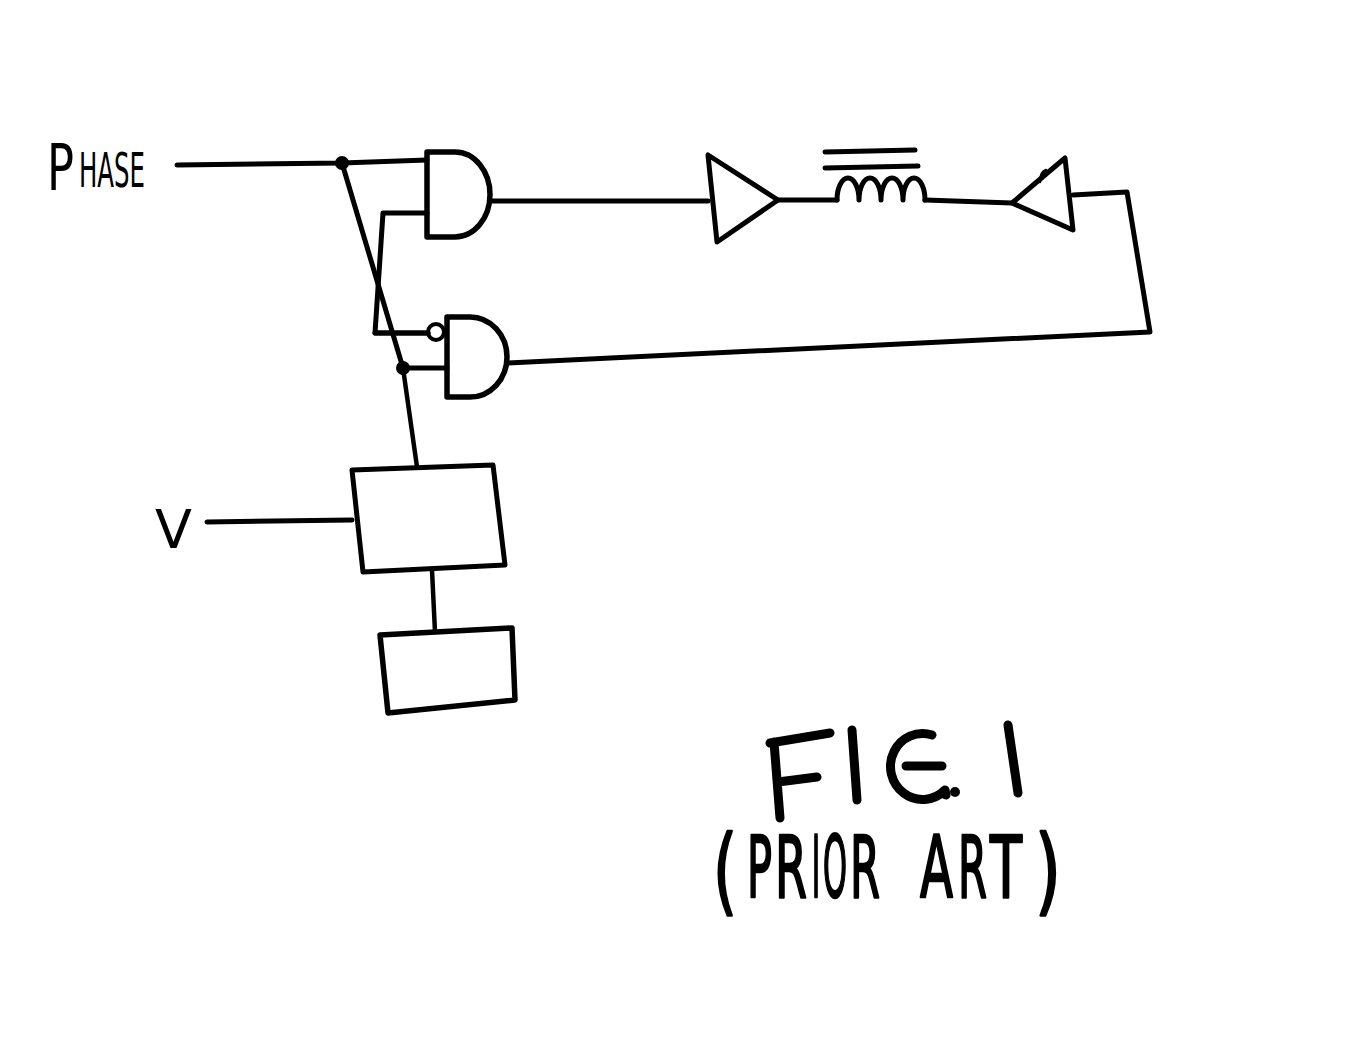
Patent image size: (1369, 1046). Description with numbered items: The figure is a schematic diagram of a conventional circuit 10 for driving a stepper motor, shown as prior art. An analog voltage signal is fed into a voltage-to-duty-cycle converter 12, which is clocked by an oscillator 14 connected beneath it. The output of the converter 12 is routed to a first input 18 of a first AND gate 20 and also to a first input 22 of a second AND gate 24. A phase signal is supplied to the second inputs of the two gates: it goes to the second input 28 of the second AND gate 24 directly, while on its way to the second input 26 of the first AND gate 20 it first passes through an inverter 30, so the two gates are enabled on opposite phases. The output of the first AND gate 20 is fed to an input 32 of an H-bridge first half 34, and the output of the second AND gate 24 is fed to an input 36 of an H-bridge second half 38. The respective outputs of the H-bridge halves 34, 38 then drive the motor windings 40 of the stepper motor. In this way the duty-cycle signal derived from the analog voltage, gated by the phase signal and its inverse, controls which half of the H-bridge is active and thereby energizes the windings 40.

The circuit 10 is at (1188, 428).
The voltage-to-duty-cycle converter 12 is at (503, 512).
The oscillator 14 is at (517, 653).
The first input of first AND gate 18 is at (448, 395).
The first AND gate 20 is at (503, 340).
The first input of second AND gate 22 is at (430, 220).
The second AND gate 24 is at (470, 185).
The second input of first AND gate 26 is at (418, 330).
The second input of second AND gate 28 is at (416, 163).
The inverter 30 is at (438, 314).
The input of H-bridge first half 32 is at (1087, 190).
The H-bridge first half 34 is at (1042, 180).
The input of H-bridge second half 36 is at (690, 195).
The H-bridge second half 38 is at (733, 187).
The motor windings 40 is at (883, 212).